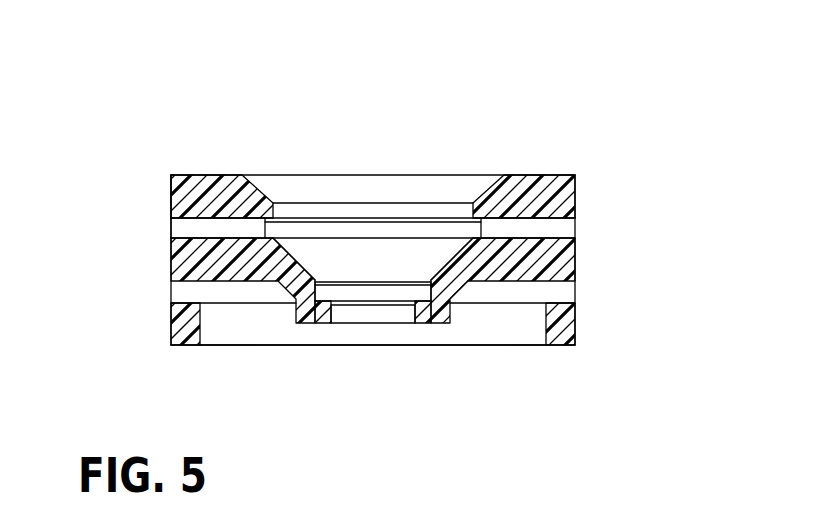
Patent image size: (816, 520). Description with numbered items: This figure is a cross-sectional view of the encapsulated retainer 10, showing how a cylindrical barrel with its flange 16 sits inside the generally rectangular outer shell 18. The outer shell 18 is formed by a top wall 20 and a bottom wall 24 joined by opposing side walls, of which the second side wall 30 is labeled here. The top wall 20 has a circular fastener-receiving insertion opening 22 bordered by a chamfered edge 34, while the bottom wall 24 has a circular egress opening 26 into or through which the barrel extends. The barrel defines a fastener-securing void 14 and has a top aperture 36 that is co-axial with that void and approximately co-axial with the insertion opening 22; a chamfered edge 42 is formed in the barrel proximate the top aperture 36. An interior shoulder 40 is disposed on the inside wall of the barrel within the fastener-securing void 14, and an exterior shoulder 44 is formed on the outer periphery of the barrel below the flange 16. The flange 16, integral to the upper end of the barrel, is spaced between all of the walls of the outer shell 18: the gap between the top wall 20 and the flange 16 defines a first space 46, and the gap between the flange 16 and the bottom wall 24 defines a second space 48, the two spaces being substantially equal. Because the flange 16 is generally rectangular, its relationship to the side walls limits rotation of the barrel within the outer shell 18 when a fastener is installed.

The encapsulated retainer 10 is at (248, 54).
The fastener-securing void 14 is at (380, 316).
The flange 16 is at (576, 259).
The outer shell 18 is at (166, 194).
The top wall 20 is at (223, 174).
The insertion opening 22 is at (300, 189).
The bottom wall 24 is at (553, 346).
The egress opening 26 is at (263, 325).
The second side wall 30 is at (567, 292).
The chamfered edge 34 is at (488, 192).
The top aperture 36 is at (383, 262).
The interior shoulder 40 is at (322, 306).
The chamfered edge 42 is at (450, 261).
The exterior shoulder 44 is at (433, 324).
The first space 46 is at (214, 229).
The second space 48 is at (195, 291).